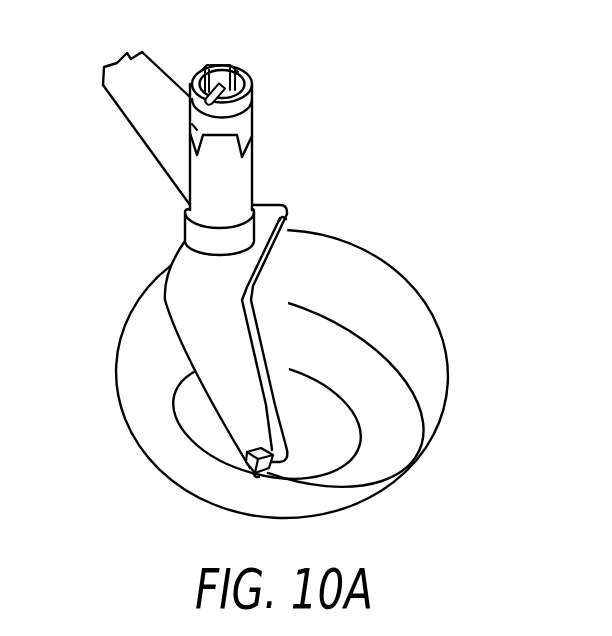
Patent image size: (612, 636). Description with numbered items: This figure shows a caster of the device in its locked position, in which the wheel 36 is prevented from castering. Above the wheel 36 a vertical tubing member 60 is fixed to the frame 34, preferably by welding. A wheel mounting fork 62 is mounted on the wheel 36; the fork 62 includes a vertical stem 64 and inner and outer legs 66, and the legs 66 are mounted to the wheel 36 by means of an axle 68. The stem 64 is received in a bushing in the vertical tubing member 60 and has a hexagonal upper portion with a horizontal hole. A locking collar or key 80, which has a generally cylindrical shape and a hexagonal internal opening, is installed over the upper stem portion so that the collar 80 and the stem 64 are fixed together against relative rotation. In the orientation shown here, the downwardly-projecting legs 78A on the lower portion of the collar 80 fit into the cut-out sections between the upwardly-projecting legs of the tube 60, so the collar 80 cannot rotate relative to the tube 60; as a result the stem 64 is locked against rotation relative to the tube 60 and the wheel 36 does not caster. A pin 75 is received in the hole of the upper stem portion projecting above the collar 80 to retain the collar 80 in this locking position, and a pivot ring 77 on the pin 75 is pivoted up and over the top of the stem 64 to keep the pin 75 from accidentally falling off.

The frame 34 is at (155, 72).
The wheel 36 is at (394, 293).
The vertical tubing member 60 is at (233, 175).
The wheel mounting fork 62 is at (193, 302).
The vertical stem 64 is at (221, 64).
The inner and outer legs 66 is at (289, 224).
The axle 68 is at (252, 472).
The pin 75 is at (205, 102).
The pivot ring 77 is at (252, 87).
The downwardly-projecting legs 78A is at (253, 137).
The locking collar 80 is at (194, 128).